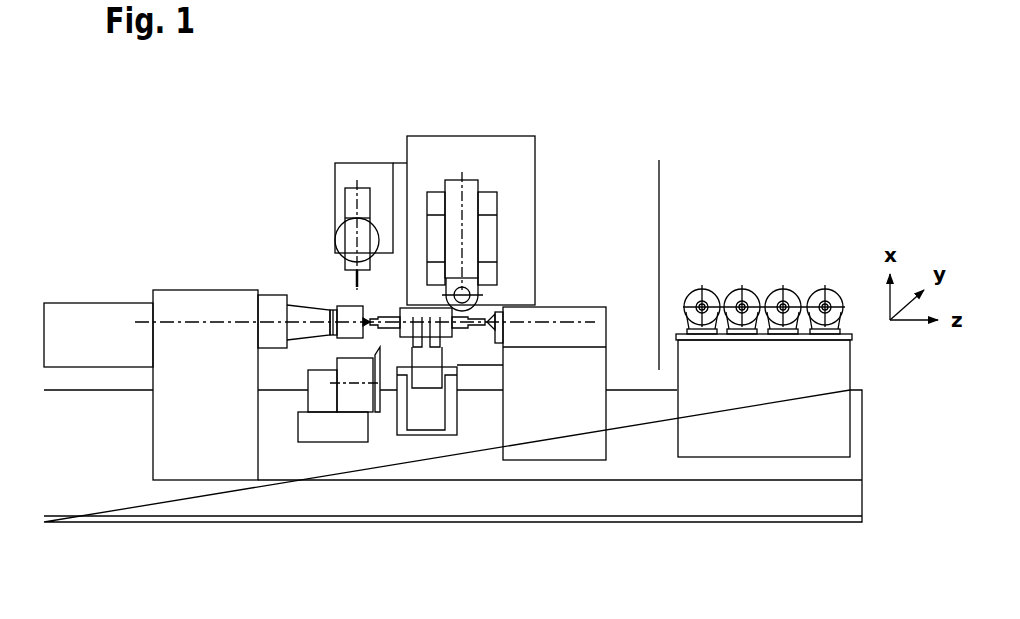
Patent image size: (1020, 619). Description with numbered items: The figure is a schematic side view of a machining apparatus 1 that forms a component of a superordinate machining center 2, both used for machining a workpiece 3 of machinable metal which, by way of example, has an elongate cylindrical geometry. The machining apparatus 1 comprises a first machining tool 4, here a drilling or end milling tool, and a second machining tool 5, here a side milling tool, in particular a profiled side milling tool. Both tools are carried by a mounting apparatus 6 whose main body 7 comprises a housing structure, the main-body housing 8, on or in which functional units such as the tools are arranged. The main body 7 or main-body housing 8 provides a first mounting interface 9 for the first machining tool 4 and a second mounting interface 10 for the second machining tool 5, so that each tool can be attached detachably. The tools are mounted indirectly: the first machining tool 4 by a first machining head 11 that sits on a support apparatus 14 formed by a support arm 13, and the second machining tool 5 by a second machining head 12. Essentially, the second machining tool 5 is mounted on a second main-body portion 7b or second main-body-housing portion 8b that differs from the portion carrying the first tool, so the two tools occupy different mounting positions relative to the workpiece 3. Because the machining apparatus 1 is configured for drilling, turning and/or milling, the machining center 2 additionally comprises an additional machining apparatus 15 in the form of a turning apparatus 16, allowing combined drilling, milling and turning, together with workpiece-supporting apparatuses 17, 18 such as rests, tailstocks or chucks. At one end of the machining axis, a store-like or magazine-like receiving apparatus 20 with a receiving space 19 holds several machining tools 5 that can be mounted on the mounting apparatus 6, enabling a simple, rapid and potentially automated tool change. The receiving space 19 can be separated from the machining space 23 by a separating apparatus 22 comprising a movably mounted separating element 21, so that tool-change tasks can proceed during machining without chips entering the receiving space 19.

The machining apparatus 1 is at (601, 77).
The machining center 2 is at (829, 137).
The workpiece 3 is at (395, 308).
The first machining tool 4 is at (355, 273).
The second machining tool 5 is at (478, 297).
The mounting apparatus 6 is at (387, 136).
The main body 7 is at (501, 183).
The second main-body portion 7b is at (505, 153).
The second main-body-housing portion 8b is at (475, 150).
The main-body housing 8 is at (535, 176).
The first mounting interface 9 is at (414, 165).
The second mounting interface 10 is at (503, 248).
The first machining head 11 is at (350, 232).
The second machining head 12 is at (472, 230).
The support arm 13 is at (295, 222).
The support apparatus 14 is at (347, 173).
The additional machining apparatus 15 is at (375, 468).
The turning apparatus 16 is at (378, 420).
The workpiece-supporting apparatus 17 is at (313, 313).
The workpiece-supporting apparatus 18 is at (583, 313).
The receiving space 19 is at (738, 273).
The receiving apparatus 20 is at (859, 331).
The separating element 21 is at (660, 187).
The separating apparatus 22 is at (686, 218).
The machining space 23 is at (477, 418).